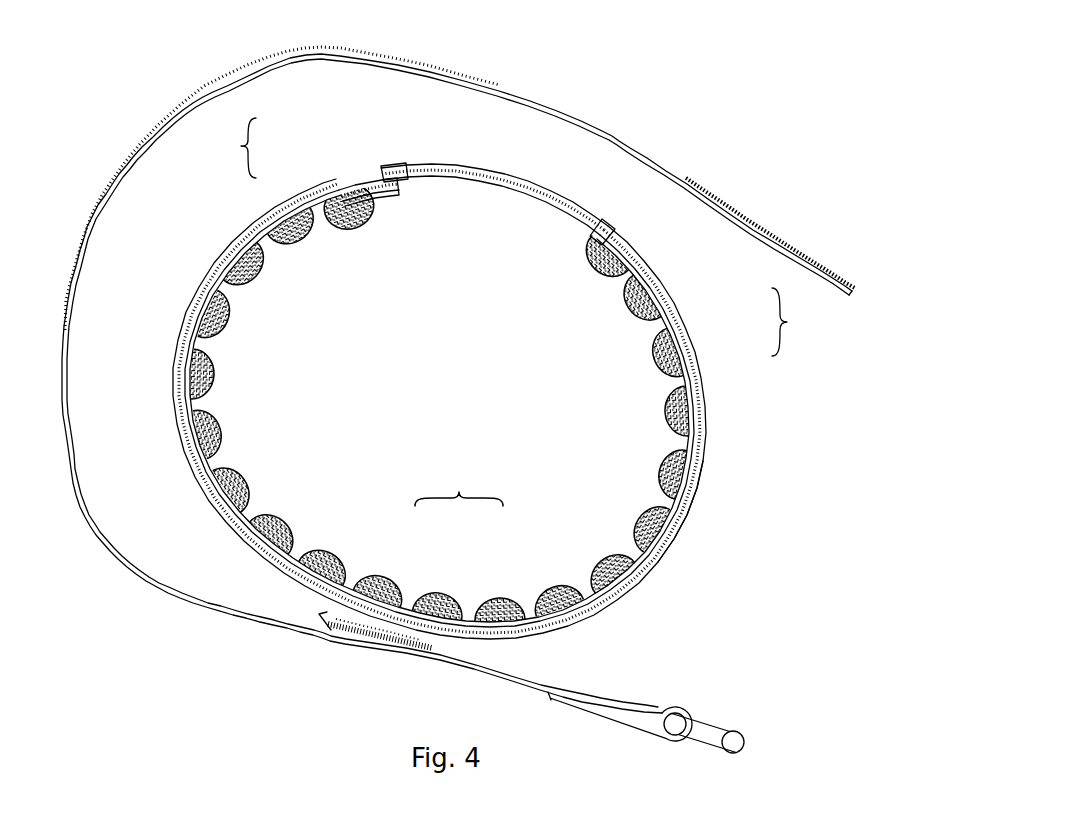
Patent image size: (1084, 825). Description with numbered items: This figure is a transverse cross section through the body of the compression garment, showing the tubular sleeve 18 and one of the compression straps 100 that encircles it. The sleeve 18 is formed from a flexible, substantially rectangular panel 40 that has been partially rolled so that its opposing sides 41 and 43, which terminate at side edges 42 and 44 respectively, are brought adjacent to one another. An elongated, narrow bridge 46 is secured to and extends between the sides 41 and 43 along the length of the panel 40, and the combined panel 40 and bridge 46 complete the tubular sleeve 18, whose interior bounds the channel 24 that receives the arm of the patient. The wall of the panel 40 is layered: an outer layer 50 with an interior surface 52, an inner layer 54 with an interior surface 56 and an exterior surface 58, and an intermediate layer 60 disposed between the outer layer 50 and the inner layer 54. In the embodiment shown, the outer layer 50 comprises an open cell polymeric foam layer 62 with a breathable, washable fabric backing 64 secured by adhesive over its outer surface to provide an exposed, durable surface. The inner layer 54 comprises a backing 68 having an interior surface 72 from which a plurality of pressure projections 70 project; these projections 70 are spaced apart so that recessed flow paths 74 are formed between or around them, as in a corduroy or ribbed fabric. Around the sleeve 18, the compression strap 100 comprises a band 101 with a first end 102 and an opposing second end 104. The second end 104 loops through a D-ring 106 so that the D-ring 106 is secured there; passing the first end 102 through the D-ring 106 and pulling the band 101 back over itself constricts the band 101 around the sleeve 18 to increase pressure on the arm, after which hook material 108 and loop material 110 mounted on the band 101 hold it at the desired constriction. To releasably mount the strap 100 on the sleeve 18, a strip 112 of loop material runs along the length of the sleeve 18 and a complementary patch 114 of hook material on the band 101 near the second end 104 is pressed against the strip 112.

The tubular sleeve 18 is at (493, 377).
The channel 24 is at (455, 413).
The panel 40 is at (493, 392).
The side 41 is at (352, 238).
The side edge 42 is at (404, 192).
The side 43 is at (574, 277).
The side edge 44 is at (588, 237).
The bridge 46 is at (378, 165).
The outer layer 50 is at (493, 409).
The interior surface 52 is at (706, 408).
The inner layer 54 is at (467, 553).
The interior surface 56 is at (658, 467).
The exterior surface 58 is at (693, 498).
The intermediate layer 60 is at (693, 421).
The open cell polymeric foam layer 62 is at (692, 355).
The backing 64 is at (703, 333).
The backing 68 is at (470, 606).
The pressure projections 70 is at (437, 606).
The interior surface 72 is at (412, 596).
The recessed flow paths 74 is at (258, 531).
The compression strap 100 is at (527, 100).
The band 101 is at (600, 128).
The first end 102 is at (774, 219).
The second end 104 is at (598, 718).
The D-ring 106 is at (718, 726).
The hook material 108 is at (782, 247).
The loop material 110 is at (229, 80).
The strip of loop material 112 is at (326, 623).
The patch of hook material 114 is at (430, 650).